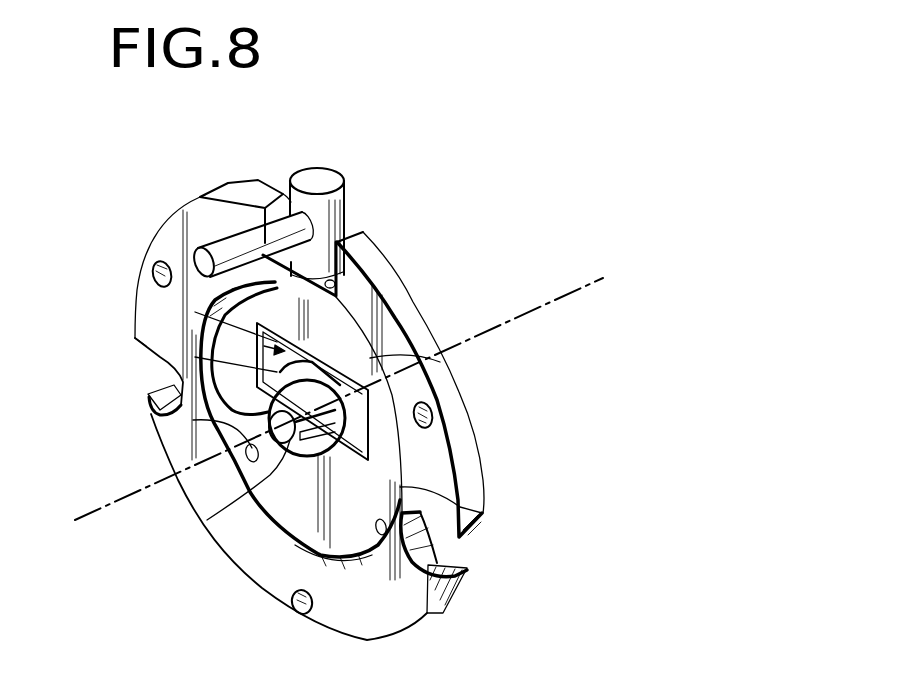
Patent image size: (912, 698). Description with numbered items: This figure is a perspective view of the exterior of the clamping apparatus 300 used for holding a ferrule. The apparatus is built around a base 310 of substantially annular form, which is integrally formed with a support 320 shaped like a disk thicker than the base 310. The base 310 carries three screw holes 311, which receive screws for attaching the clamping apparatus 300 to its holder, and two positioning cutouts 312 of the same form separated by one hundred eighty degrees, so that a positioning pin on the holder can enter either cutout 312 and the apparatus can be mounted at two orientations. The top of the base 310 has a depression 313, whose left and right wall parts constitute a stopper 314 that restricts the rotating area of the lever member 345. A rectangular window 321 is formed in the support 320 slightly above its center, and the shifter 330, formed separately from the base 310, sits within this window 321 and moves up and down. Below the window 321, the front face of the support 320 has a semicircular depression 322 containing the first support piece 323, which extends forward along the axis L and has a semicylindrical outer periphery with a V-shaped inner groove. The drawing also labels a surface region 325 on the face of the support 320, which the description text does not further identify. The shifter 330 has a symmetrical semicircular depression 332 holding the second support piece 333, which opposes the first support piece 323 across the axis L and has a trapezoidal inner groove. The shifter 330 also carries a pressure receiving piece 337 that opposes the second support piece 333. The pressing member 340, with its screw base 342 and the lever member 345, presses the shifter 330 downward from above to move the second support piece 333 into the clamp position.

The clamping apparatus 300 is at (506, 252).
The base 310 is at (388, 592).
The screw holes 311 is at (155, 282).
The positioning cutouts 312 is at (150, 388).
The depression 313 is at (354, 219).
The stopper 314 is at (280, 195).
The support 320 is at (315, 503).
The rectangular window 321 is at (365, 440).
The semicircular depression 322 is at (308, 498).
The first support piece 323 is at (293, 495).
The guide surface 325 is at (440, 362).
The shifter 330 is at (195, 312).
The semicircular depression 332 is at (345, 362).
The second support piece 333 is at (135, 340).
The pressure receiving piece 337 is at (305, 367).
The pressing member 340 is at (300, 156).
The screw base 342 is at (336, 176).
The lever member 345 is at (223, 247).
The axis L is at (93, 508).